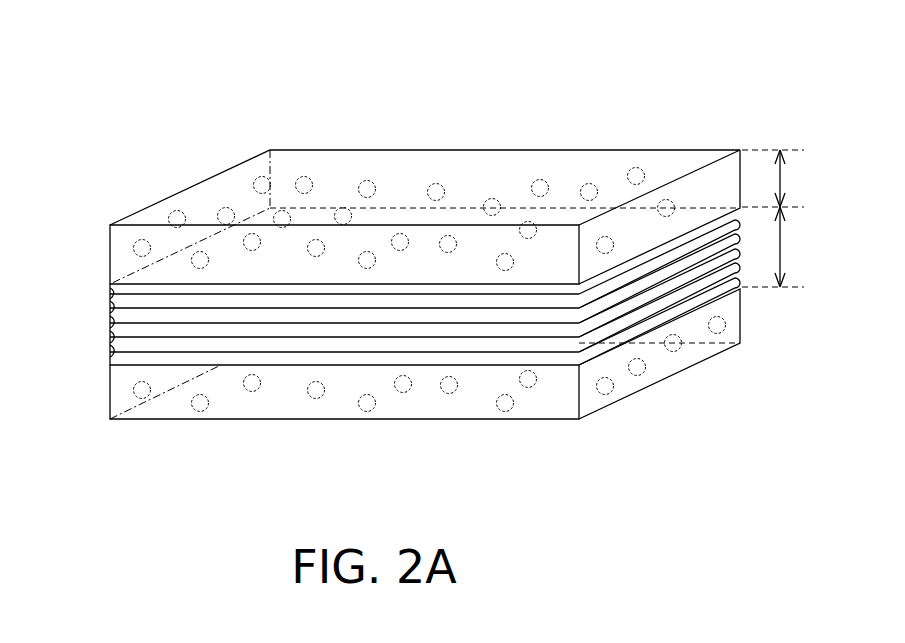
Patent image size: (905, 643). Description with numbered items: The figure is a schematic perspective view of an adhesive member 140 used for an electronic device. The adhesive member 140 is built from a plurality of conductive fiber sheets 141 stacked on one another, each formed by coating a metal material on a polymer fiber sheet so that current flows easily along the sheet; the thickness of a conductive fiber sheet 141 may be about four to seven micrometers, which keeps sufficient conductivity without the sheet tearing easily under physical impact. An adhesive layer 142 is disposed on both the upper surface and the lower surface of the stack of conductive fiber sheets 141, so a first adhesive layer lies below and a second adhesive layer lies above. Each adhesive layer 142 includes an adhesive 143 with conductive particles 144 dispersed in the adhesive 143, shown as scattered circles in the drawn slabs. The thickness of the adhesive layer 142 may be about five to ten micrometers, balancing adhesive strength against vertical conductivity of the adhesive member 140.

The adhesive member 140 is at (716, 131).
The conductive fiber sheets 141 is at (113, 292).
The adhesive layer 142 is at (110, 247).
The adhesive 143 is at (424, 168).
The conductive particles 144 is at (363, 180).